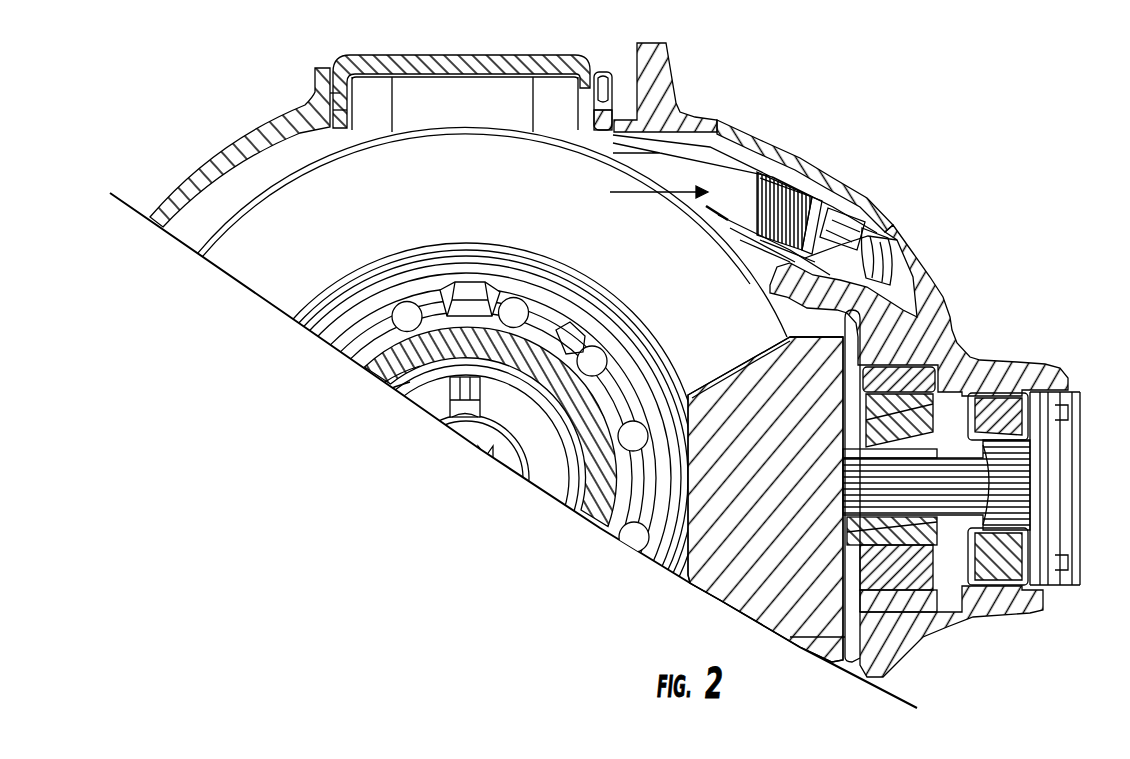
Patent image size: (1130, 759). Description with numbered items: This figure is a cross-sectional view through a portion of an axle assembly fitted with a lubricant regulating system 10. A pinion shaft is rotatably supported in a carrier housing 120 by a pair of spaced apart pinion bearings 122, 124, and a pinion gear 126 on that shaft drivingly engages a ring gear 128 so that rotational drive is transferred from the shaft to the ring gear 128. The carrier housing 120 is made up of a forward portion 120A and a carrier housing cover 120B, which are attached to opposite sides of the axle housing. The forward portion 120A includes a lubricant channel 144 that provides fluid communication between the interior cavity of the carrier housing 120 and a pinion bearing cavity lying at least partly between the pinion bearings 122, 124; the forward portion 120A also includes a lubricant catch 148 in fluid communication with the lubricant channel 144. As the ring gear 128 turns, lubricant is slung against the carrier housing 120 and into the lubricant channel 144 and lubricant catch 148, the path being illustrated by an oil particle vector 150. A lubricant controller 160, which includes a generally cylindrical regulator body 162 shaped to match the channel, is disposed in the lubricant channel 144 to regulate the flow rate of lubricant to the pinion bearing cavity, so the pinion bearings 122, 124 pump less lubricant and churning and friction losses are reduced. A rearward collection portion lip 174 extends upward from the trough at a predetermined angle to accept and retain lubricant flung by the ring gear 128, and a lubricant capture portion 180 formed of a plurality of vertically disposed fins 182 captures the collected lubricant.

The lubricant regulating system 10 is at (934, 86).
The carrier housing 120 is at (665, 98).
The forward portion 120A is at (765, 150).
The carrier housing cover 120B is at (217, 162).
The pinion bearing 122 is at (945, 330).
The pinion bearing 124 is at (1005, 405).
The pinion gear 126 is at (807, 597).
The ring gear 128 is at (310, 200).
The lubricant channel 144 is at (905, 290).
The lubricant catch 148 is at (715, 160).
The oil particle vector 150 is at (640, 190).
The lubricant controller 160 is at (885, 255).
The regulator body 162 is at (848, 210).
The collection portion lip 174 is at (718, 210).
The lubricant capture portion 180 is at (795, 215).
The vertically disposed fins 182 is at (770, 195).